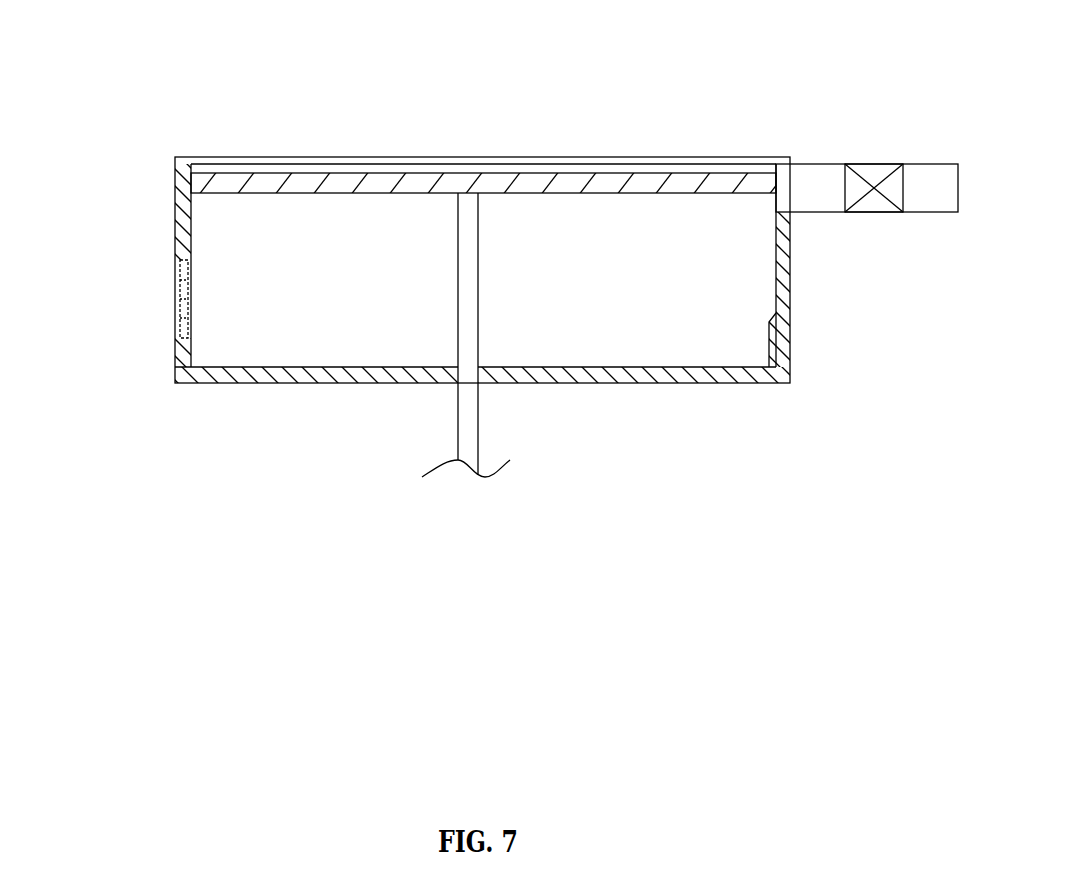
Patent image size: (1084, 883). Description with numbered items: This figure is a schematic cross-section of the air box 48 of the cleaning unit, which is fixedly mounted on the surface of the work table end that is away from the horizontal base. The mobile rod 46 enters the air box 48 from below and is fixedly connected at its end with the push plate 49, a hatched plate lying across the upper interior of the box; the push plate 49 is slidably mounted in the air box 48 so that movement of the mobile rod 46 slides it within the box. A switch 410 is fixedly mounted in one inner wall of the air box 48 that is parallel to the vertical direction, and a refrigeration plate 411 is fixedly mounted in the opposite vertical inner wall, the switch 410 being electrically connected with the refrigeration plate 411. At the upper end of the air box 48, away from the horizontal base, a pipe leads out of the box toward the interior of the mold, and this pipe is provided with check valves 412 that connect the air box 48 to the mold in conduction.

The mobile rod 46 is at (465, 420).
The air box 48 is at (645, 372).
The push plate 49 is at (558, 185).
The switch 410 is at (777, 342).
The refrigeration plate 411 is at (178, 293).
The check valve 412 is at (877, 163).